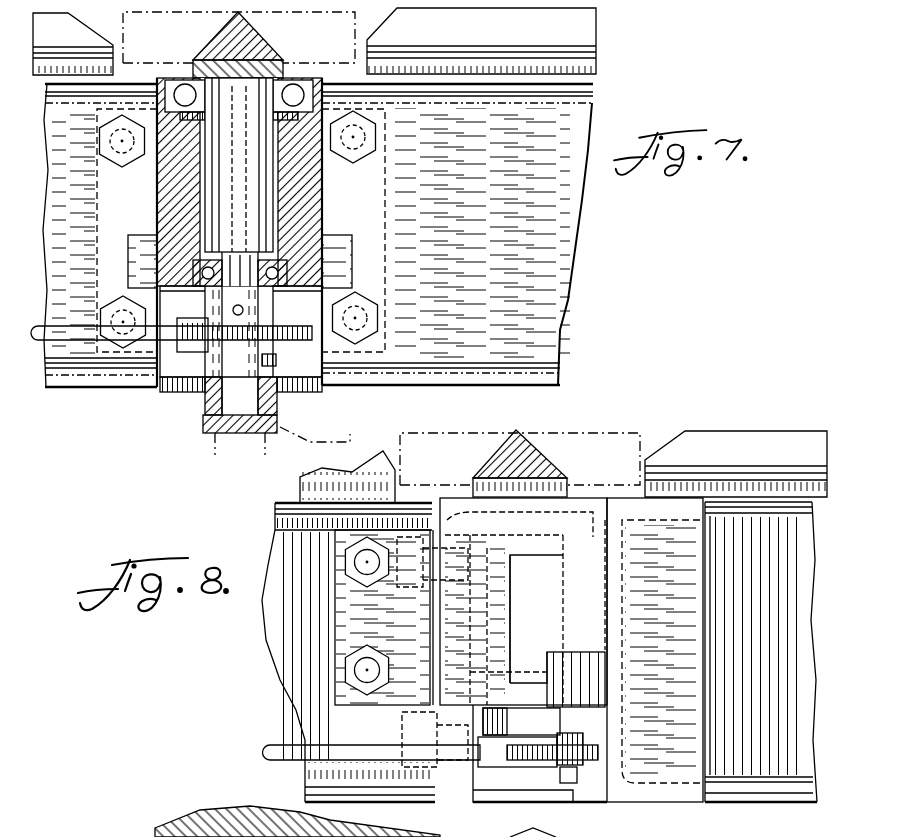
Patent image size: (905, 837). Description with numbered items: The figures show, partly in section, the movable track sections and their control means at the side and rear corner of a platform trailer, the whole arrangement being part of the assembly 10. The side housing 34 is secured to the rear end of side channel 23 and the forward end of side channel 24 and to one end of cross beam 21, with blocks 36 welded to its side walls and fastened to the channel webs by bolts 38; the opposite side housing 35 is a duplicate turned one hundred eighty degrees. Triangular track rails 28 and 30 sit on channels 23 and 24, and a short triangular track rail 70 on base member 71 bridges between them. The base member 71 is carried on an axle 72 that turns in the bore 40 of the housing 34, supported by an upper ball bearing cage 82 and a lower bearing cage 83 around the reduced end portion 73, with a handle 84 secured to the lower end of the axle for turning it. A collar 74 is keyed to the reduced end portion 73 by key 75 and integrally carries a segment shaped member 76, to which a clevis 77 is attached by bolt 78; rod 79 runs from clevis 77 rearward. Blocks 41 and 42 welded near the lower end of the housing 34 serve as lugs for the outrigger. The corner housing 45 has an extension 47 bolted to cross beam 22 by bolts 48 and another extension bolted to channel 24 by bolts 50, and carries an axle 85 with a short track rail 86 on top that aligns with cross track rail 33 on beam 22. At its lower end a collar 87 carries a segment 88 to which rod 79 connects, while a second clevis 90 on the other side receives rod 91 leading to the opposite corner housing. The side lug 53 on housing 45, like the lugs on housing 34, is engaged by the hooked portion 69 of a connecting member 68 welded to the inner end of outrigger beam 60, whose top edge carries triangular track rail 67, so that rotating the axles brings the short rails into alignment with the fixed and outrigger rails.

In FIG. 7, the screw jack assembly 10 is at (350, 24).
In FIG. 7, the support beam 21 is at (363, 88).
In FIG. 8, the support beam 21 is at (407, 835).
In FIG. 8, the support beam 22 is at (277, 628).
In FIG. 7, the side channel 23 is at (493, 244).
In FIG. 7, the side channel 24 is at (61, 235).
In FIG. 8, the side channel 24 is at (550, 806).
In FIG. 7, the track rail 28 is at (389, 35).
In FIG. 7, the track rail 30 is at (73, 44).
In FIG. 8, the cross track rail 33 is at (355, 468).
In FIG. 7, the housing 34 is at (315, 204).
In FIG. 7, the housing 35 is at (377, 183).
In FIG. 7, the block 36 is at (73, 232).
In FIG. 7, the bolt 38 is at (110, 142).
In FIG. 7, the bore 40 is at (284, 200).
In FIG. 7, the block 41 is at (338, 235).
In FIG. 7, the block 42 is at (137, 233).
In FIG. 8, the housing 45 is at (503, 620).
In FIG. 8, the extension 47 is at (353, 607).
In FIG. 8, the bolt 48 is at (355, 563).
In FIG. 8, the bolt 50 is at (400, 588).
In FIG. 8, the side lug 53 is at (593, 680).
In FIG. 8, the beam 60 is at (743, 637).
In FIG. 8, the track rail 67 is at (698, 440).
In FIG. 8, the connecting member 68 is at (653, 637).
In FIG. 8, the hooked portion 69 is at (527, 665).
In FIG. 7, the track rail 70 is at (248, 38).
In FIG. 7, the base member 71 is at (284, 66).
In FIG. 7, the axle 72 is at (262, 176).
In FIG. 7, the reduced end portion 73 is at (248, 400).
In FIG. 7, the collar 74 is at (262, 306).
In FIG. 7, the key 75 is at (233, 310).
In FIG. 7, the segment shaped member 76 is at (313, 343).
In FIG. 7, the clevis 77 is at (193, 352).
In FIG. 7, the bolt 78 is at (276, 361).
In FIG. 7, the rod 79 is at (47, 342).
In FIG. 7, the upper ball bearing cage 82 is at (287, 114).
In FIG. 7, the lower bearing cage 83 is at (318, 214).
In FIG. 7, the plate 84 is at (276, 433).
In FIG. 8, the axle 85 is at (563, 633).
In FIG. 8, the track rail 86 is at (578, 432).
In FIG. 8, the collar 87 is at (560, 719).
In FIG. 8, the segment 88 is at (598, 748).
In FIG. 8, the clevis 90 is at (510, 768).
In FIG. 8, the rod 91 is at (268, 745).